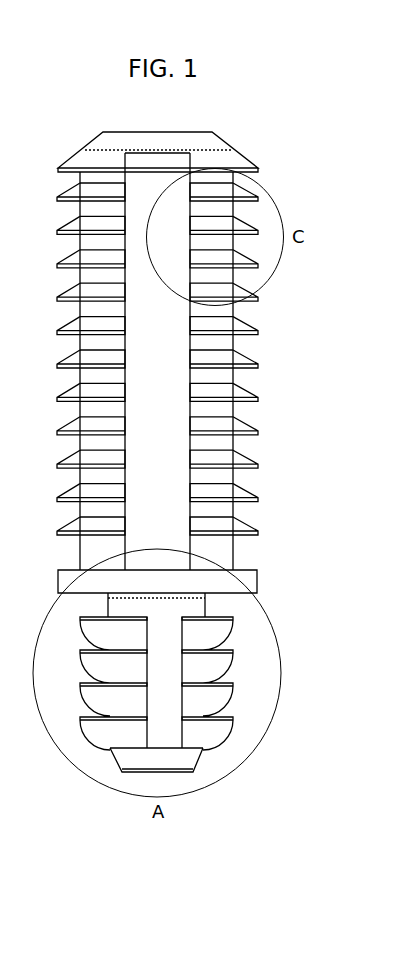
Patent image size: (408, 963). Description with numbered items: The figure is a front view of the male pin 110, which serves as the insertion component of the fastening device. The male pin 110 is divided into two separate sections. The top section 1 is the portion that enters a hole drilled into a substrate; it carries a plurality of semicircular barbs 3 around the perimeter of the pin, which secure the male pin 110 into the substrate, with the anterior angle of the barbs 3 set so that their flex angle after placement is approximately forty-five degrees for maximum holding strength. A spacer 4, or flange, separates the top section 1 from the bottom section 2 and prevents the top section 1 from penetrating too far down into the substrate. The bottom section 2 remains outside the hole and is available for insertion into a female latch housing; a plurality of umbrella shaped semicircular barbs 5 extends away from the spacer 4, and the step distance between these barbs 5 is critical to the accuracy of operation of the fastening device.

The male pin 110 is at (218, 158).
The top section 1 is at (165, 363).
The semicircular barbs 3 is at (257, 203).
The spacer 4 is at (257, 580).
The bottom section 2 is at (167, 673).
The umbrella shaped semicircular barbs 5 is at (233, 720).